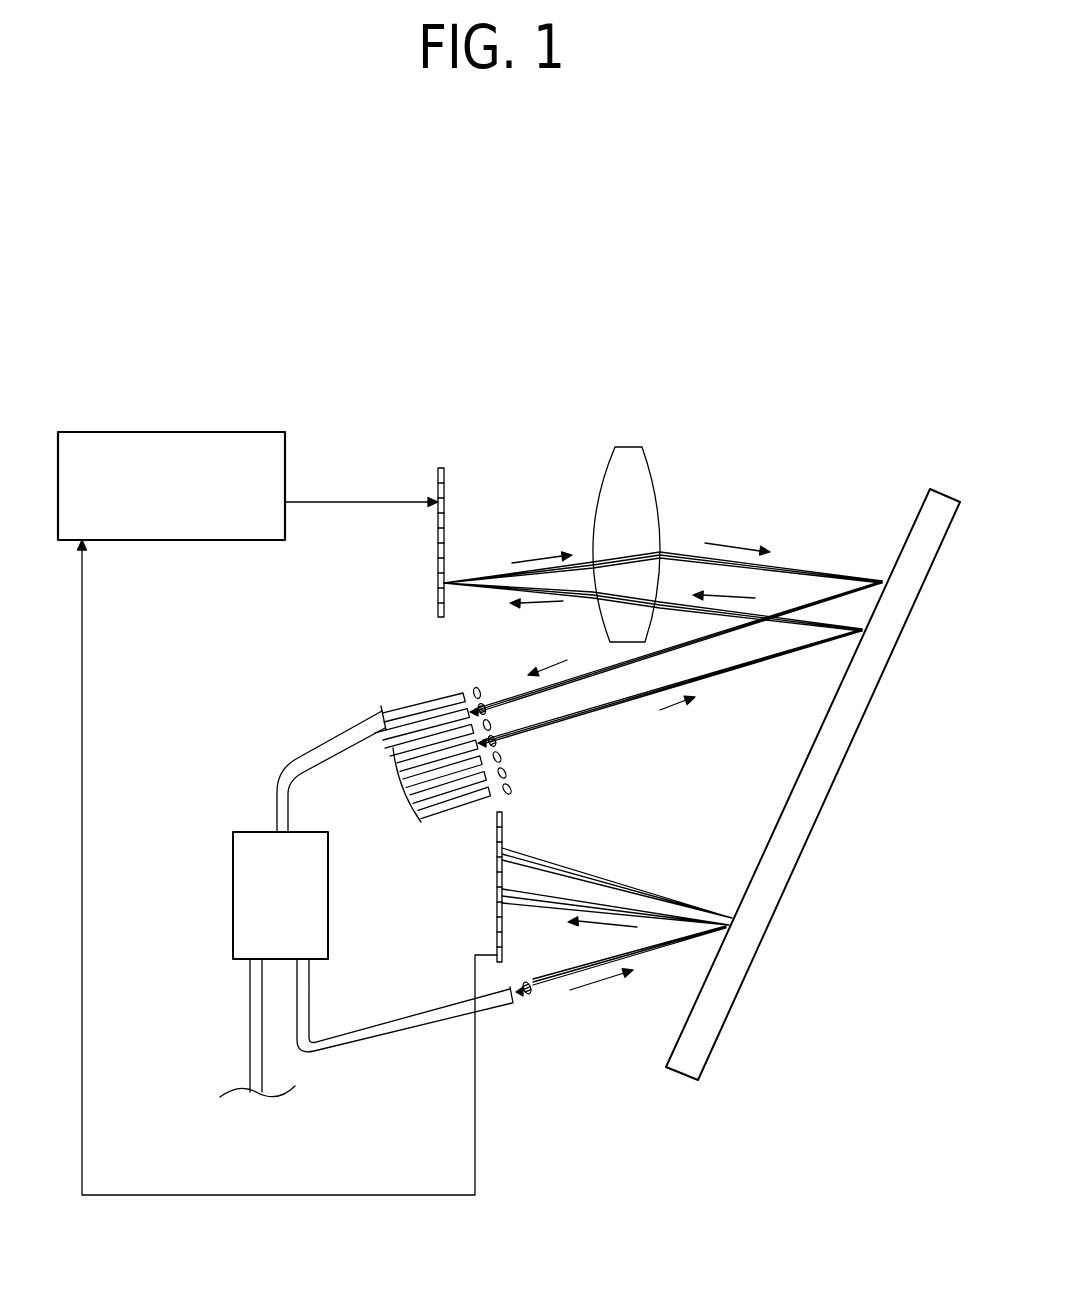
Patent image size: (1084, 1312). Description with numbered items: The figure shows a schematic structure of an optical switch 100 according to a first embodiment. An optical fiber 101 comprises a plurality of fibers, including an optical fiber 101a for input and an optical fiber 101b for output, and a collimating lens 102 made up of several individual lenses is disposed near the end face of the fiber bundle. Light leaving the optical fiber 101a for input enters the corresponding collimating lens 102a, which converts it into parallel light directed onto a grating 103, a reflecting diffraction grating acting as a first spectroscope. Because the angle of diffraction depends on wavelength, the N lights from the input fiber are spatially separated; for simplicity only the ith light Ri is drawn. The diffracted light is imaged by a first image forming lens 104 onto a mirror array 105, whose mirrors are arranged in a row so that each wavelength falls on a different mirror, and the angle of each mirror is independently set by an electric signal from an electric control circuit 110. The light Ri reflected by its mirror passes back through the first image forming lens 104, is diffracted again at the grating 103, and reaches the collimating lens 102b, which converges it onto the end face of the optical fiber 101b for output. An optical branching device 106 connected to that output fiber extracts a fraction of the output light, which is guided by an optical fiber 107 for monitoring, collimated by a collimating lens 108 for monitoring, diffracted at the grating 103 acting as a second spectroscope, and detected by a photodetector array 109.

The optical switch 100 is at (457, 308).
The optical fiber 101 is at (412, 749).
The optical fiber for input 101a is at (403, 765).
The optical fiber for output 101b is at (318, 750).
The collimating lens 102 is at (513, 700).
The collimating lens 102a is at (497, 743).
The collimating lens 102b is at (484, 703).
The grating 103 is at (806, 846).
The first image forming lens 104 is at (627, 447).
The mirror array 105 is at (441, 468).
The optical branching device 106 is at (233, 858).
The optical fiber for monitoring 107 is at (391, 1037).
The collimating lens for monitoring 108 is at (524, 996).
The photodetector array 109 is at (497, 886).
The electric control circuit 110 is at (240, 432).
The ith light Ri is at (727, 613).